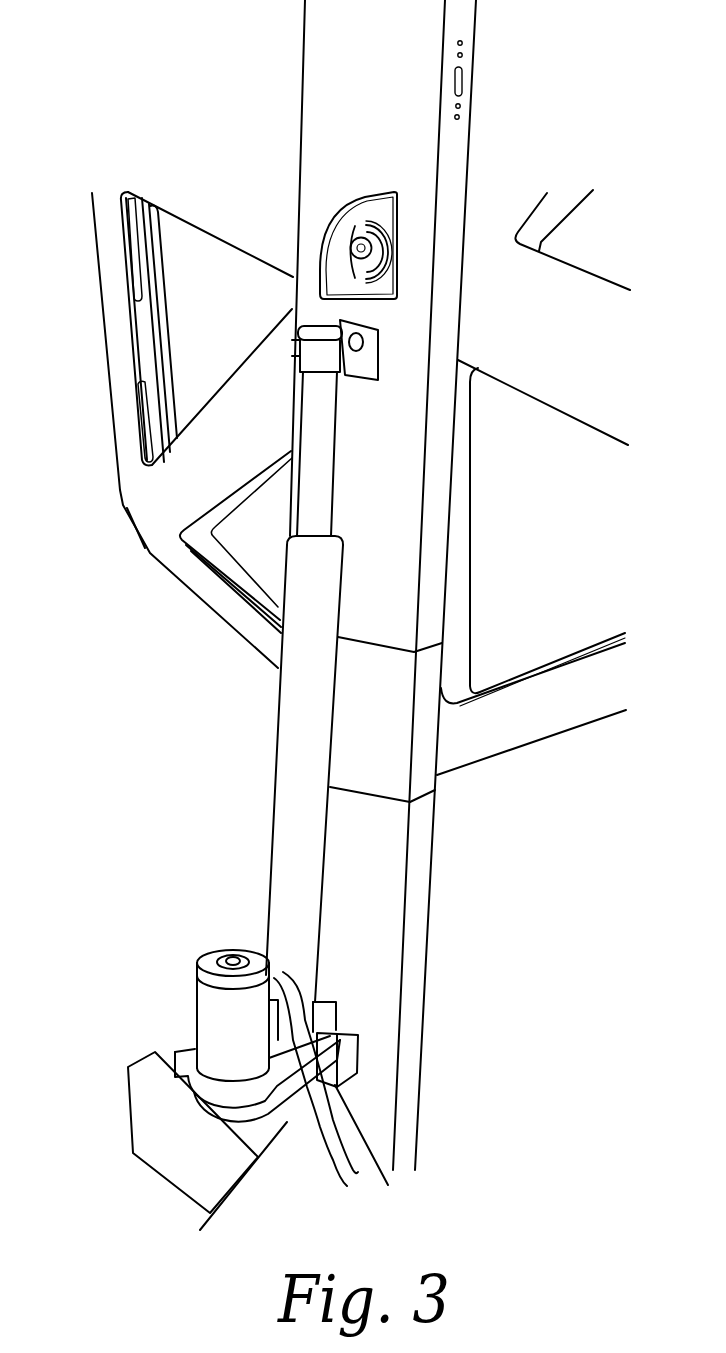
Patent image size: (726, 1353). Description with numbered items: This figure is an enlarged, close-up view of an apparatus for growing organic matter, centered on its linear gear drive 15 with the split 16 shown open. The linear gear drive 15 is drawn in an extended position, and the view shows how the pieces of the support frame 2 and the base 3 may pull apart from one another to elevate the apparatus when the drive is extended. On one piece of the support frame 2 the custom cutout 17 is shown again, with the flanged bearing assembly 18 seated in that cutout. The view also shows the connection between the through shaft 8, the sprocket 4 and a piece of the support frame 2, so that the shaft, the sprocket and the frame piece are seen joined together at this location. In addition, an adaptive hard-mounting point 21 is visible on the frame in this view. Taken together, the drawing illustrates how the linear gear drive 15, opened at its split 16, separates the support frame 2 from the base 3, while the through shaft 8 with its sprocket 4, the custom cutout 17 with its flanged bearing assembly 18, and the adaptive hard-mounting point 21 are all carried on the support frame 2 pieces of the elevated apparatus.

The support frame 2 is at (440, 453).
The base 3 is at (358, 840).
The sprocket 4 is at (202, 583).
The through shaft 8 is at (360, 249).
The linear gear drive 15 is at (286, 443).
The split 16 is at (358, 718).
The custom cutout 17 is at (373, 192).
The flanged bearing assembly 18 is at (395, 236).
The adaptive hard-mounting point 21 is at (472, 78).